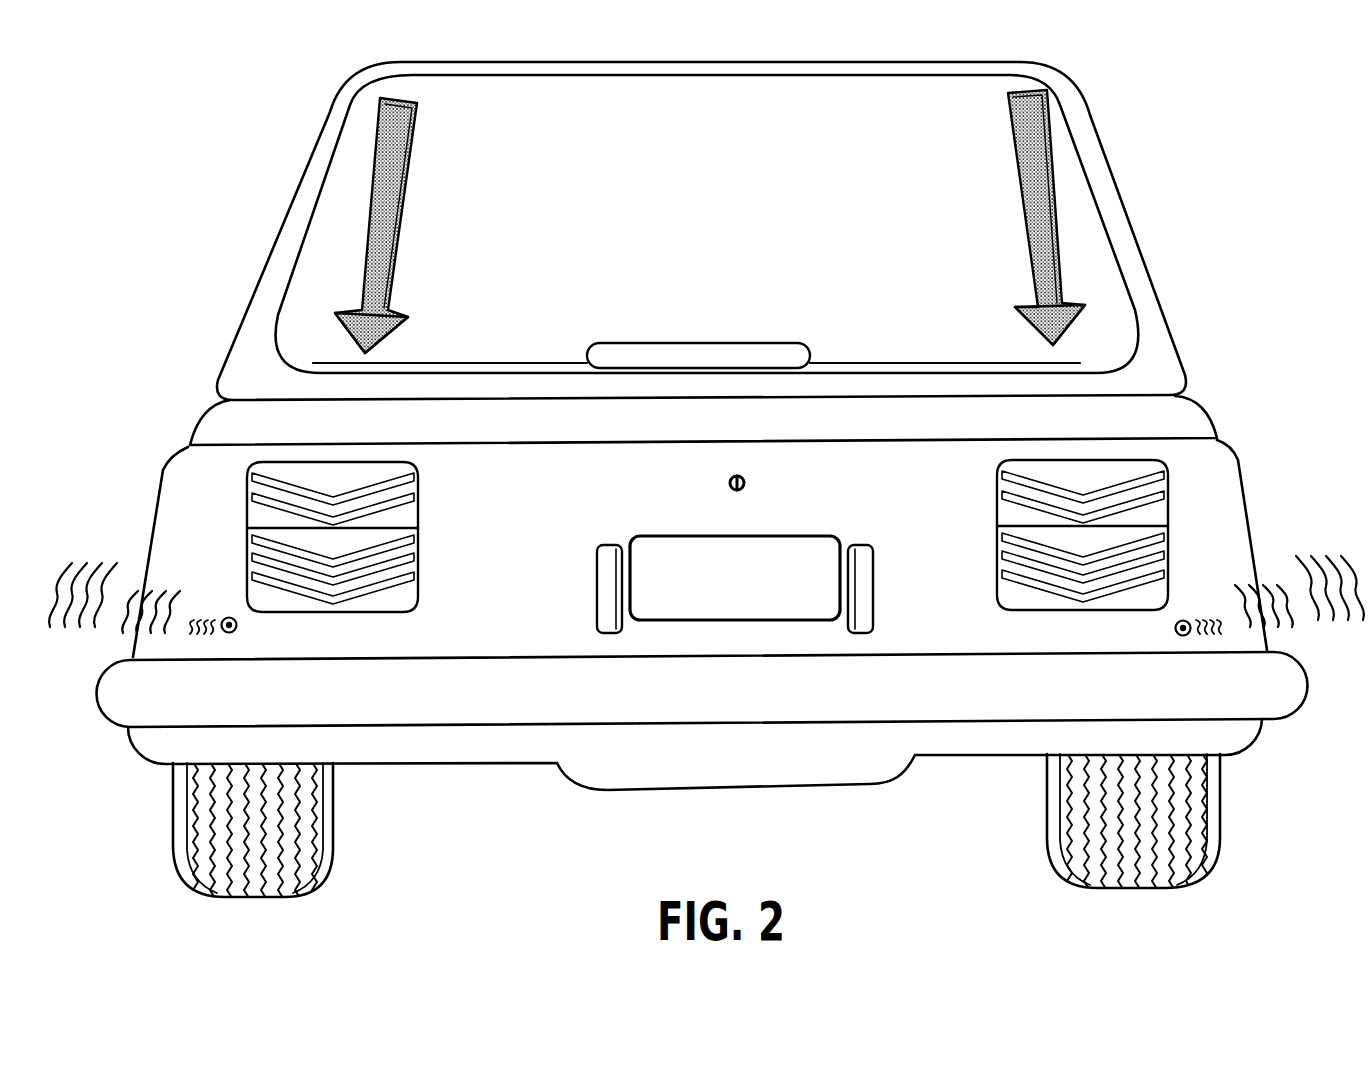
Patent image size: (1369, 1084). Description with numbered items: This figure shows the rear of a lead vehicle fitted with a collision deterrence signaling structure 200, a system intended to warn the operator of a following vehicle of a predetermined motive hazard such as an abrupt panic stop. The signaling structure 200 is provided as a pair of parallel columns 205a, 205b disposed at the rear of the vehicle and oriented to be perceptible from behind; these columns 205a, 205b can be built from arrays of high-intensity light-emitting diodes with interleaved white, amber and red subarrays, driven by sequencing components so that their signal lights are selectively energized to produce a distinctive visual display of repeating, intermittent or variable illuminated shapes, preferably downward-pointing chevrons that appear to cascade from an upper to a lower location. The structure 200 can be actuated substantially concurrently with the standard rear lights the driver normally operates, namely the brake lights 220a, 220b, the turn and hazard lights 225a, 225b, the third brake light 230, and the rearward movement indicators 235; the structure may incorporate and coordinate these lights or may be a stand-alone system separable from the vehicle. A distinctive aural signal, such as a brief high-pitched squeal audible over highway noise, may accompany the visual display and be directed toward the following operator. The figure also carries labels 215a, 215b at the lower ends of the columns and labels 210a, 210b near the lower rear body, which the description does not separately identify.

The collision deterrence signaling structure 200 is at (975, 152).
The column 205a is at (394, 262).
The column 205b is at (1028, 260).
The left arrow head indicator 215a is at (398, 318).
The right arrow head indicator 215b is at (1017, 307).
The third brake light 230 is at (652, 343).
The turn/hazard light 225a is at (418, 463).
The turn/hazard light 225b is at (996, 478).
The brake light 220a is at (424, 590).
The brake light 220b is at (995, 588).
The left rear sensor 210a is at (238, 624).
The right rear sensor 210b is at (1175, 626).
The rearward movement indicator 235 is at (847, 550).